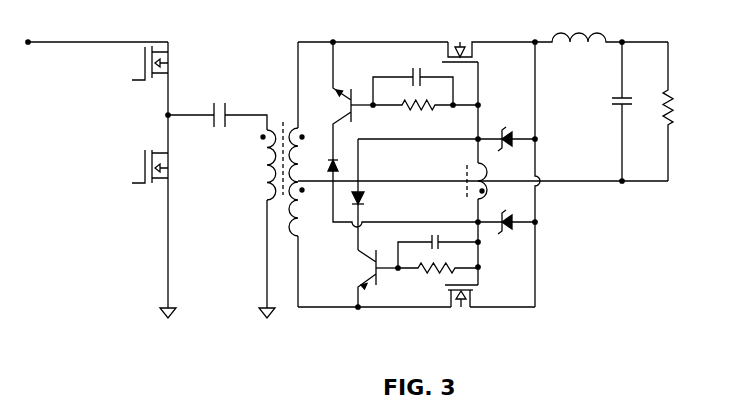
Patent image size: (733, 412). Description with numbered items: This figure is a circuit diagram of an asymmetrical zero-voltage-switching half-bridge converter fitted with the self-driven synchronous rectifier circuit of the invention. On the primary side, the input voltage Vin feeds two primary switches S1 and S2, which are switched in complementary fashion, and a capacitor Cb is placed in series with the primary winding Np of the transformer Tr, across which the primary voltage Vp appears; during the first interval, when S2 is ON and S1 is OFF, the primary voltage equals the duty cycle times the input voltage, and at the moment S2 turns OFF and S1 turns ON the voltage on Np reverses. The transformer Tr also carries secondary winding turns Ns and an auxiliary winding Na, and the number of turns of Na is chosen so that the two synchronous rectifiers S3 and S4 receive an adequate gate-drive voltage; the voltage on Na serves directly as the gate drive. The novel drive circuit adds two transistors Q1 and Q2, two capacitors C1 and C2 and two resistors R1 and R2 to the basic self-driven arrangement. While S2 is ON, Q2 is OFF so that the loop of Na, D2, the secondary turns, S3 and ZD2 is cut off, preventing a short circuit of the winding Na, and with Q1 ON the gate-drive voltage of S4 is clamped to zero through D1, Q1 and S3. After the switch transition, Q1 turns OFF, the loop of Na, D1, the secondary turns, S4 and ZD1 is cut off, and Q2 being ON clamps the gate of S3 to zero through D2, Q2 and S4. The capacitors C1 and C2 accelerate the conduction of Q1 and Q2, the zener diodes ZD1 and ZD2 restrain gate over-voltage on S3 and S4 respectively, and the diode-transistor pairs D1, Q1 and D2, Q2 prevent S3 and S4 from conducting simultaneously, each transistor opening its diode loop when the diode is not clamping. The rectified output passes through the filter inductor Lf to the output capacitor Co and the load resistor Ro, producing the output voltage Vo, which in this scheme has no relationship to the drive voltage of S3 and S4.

The input voltage Vin is at (97, 58).
The primary switch S1 is at (131, 66).
The primary switch S2 is at (131, 170).
The capacitor Cb is at (217, 104).
The transformer Tr is at (352, 180).
The primary winding Np is at (255, 224).
The primary voltage Vp is at (227, 175).
The secondary winding Ns is at (303, 174).
The auxiliary winding Na is at (459, 178).
The transistor Q1 is at (340, 101).
The transistor Q2 is at (360, 278).
The diode D1 is at (403, 185).
The diode D2 is at (374, 194).
The capacitor C1 is at (413, 78).
The capacitor C2 is at (438, 248).
The resistor R1 is at (425, 120).
The resistor R2 is at (438, 283).
The synchronous rectifier S3 is at (488, 40).
The synchronous rectifier S4 is at (461, 311).
The zener diode ZD1 is at (506, 124).
The zener diode ZD2 is at (506, 211).
The output filter inductor Lf is at (601, 26).
The output capacitor Co is at (610, 111).
The load resistor Ro is at (654, 111).
The output voltage Vo is at (692, 106).